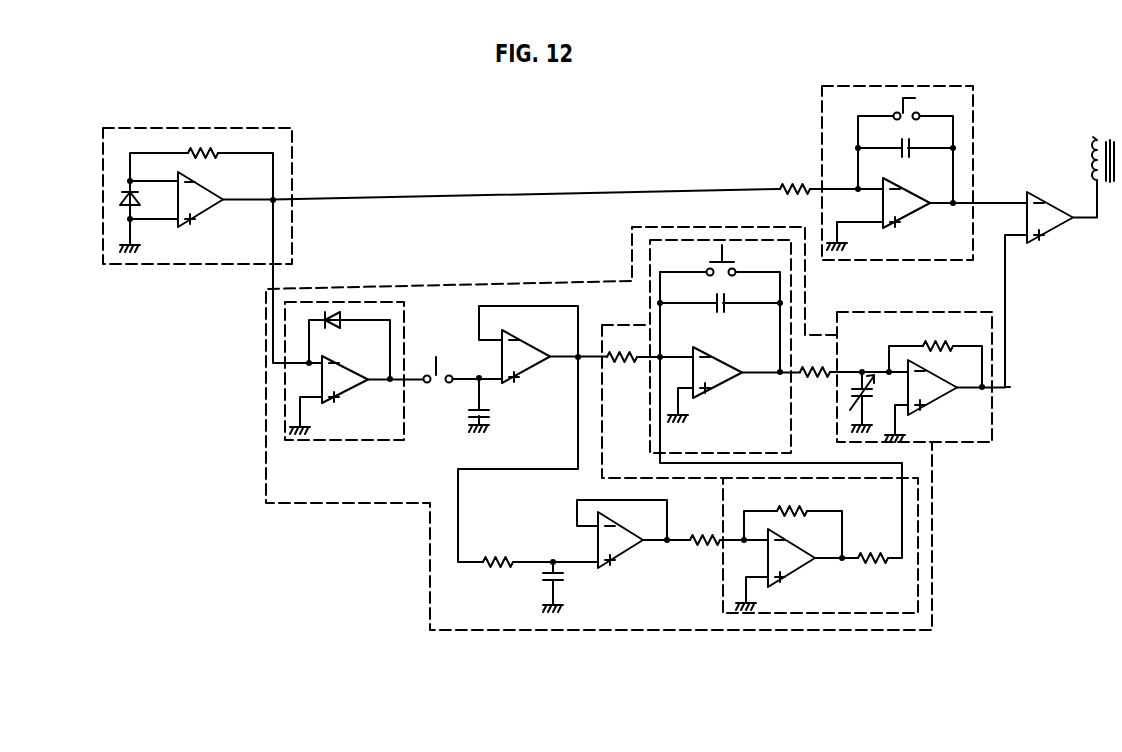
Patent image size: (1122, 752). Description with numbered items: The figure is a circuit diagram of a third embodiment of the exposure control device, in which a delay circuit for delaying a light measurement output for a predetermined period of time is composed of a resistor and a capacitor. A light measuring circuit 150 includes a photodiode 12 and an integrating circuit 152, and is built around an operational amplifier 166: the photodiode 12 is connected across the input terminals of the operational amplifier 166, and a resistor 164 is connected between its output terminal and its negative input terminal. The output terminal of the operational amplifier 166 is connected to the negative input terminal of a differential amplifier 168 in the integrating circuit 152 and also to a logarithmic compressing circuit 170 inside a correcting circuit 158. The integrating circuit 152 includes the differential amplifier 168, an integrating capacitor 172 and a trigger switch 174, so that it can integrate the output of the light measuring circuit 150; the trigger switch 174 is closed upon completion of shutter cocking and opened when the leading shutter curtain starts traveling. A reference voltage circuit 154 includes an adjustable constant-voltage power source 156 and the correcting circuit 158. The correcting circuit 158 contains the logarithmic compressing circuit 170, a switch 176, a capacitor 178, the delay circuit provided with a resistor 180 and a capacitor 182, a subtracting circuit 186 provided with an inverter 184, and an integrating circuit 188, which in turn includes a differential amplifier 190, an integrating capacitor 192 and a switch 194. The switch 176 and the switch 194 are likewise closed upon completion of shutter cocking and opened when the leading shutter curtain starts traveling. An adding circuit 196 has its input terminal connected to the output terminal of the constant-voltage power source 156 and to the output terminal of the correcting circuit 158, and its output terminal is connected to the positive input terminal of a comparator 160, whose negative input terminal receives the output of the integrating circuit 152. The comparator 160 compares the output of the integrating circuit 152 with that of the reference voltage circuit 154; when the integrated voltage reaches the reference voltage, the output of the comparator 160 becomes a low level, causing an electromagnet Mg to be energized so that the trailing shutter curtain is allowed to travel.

The photodiode 12 is at (127, 187).
The light measuring circuit 150 is at (192, 272).
The integrating circuit 152 is at (856, 78).
The reference voltage circuit 154 is at (1021, 383).
The constant-voltage power source 156 is at (858, 380).
The correcting circuit 158 is at (603, 640).
The comparator 160 is at (1032, 200).
The resistor 164 is at (208, 156).
The operational amplifier 166 is at (202, 197).
The differential amplifier 168 is at (902, 212).
The logarithmic compressing circuit 170 is at (346, 446).
The integrating capacitor 172 is at (907, 152).
The trigger switch 174 is at (910, 108).
The switch 176 is at (436, 357).
The capacitor 178 is at (486, 410).
The resistor 180 is at (498, 560).
The capacitor 182 is at (562, 583).
The inverter 184 is at (789, 563).
The subtracting circuit 186 is at (721, 565).
The integrating circuit 188 is at (802, 401).
The differential amplifier 190 is at (718, 385).
The integrating capacitor 192 is at (720, 310).
The switch 194 is at (742, 262).
The adding circuit 196 is at (966, 444).
The electromagnet Mg is at (1095, 183).